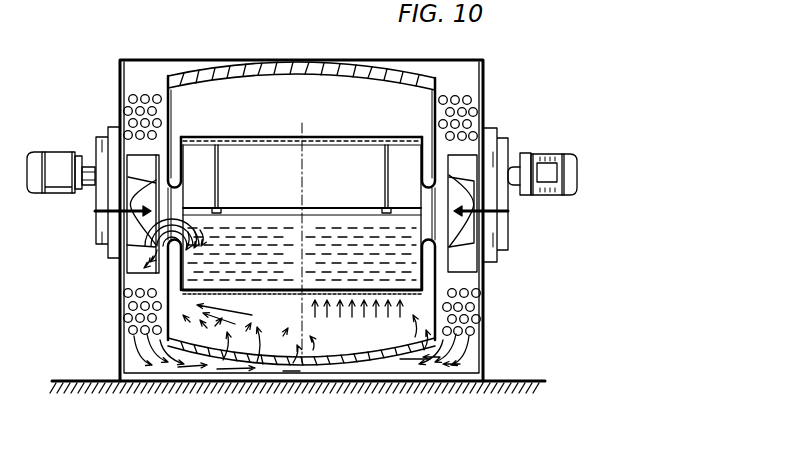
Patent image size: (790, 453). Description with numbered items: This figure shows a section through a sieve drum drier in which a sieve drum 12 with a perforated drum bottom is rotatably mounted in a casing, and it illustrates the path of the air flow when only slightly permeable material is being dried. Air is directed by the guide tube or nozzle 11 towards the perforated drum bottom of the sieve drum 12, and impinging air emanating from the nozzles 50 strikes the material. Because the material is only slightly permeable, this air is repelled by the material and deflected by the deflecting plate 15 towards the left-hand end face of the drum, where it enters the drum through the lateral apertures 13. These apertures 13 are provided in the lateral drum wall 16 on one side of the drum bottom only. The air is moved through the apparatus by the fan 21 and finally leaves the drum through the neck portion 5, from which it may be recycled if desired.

The neck portion 5 is at (176, 188).
The guide tube or nozzle 11 is at (277, 92).
The sieve drum 12 is at (283, 137).
The lateral apertures 13 is at (187, 263).
The deflecting plate 15 is at (167, 270).
The lateral drum wall 16 is at (182, 137).
The fan 21 is at (143, 167).
The nozzles 50 is at (118, 318).